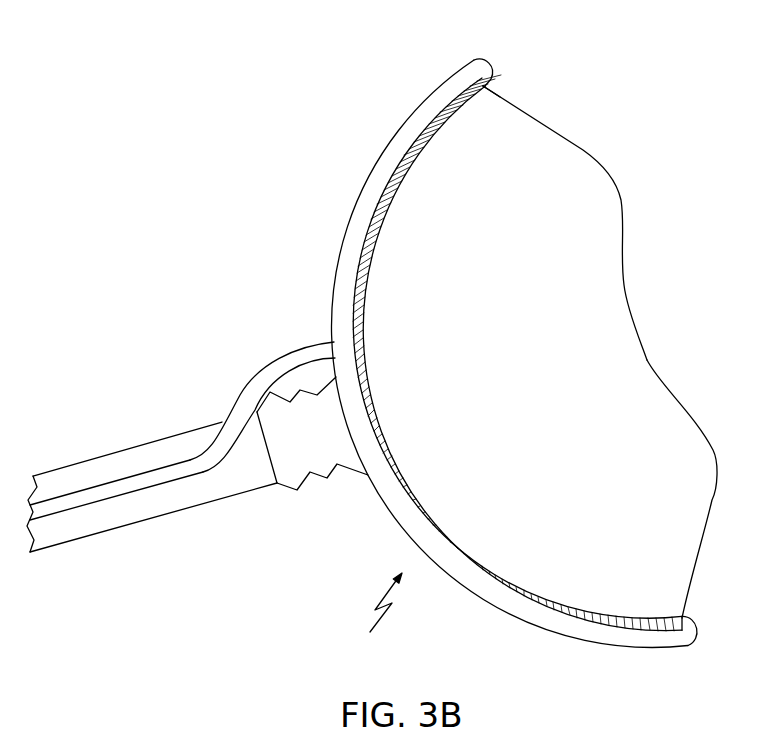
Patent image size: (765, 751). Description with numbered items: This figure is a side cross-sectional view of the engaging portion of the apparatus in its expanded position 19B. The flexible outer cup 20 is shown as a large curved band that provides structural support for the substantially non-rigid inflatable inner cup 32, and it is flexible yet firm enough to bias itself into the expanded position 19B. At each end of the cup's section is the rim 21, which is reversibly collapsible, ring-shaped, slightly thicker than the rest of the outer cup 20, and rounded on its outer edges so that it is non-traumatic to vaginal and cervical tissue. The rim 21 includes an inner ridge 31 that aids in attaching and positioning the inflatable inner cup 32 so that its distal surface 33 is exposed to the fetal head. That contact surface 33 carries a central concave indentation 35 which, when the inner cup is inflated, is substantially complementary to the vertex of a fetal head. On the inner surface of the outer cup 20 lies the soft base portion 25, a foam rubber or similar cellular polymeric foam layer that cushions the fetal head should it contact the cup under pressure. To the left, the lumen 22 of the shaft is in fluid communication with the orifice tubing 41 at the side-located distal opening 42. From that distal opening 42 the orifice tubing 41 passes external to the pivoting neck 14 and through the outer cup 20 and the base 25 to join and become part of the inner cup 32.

The pivoting neck 14 is at (297, 493).
The expanded position 19B is at (365, 615).
The flexible outer cup 20 is at (335, 270).
The rim 21 is at (487, 67).
The lumen 22 is at (82, 507).
The soft base portion 25 is at (646, 631).
The inner ridge 31 is at (492, 84).
The inflatable inner cup 32 is at (600, 339).
The distal surface 33 is at (583, 150).
The central concave indentation 35 is at (633, 327).
The orifice tubing 41 is at (280, 350).
The distal opening 42 is at (222, 418).